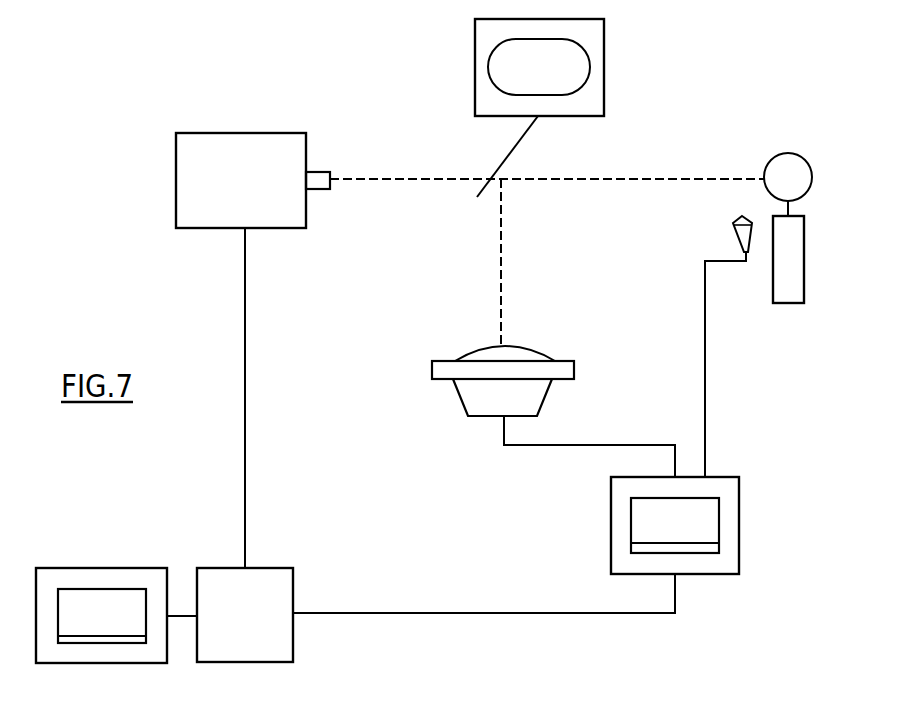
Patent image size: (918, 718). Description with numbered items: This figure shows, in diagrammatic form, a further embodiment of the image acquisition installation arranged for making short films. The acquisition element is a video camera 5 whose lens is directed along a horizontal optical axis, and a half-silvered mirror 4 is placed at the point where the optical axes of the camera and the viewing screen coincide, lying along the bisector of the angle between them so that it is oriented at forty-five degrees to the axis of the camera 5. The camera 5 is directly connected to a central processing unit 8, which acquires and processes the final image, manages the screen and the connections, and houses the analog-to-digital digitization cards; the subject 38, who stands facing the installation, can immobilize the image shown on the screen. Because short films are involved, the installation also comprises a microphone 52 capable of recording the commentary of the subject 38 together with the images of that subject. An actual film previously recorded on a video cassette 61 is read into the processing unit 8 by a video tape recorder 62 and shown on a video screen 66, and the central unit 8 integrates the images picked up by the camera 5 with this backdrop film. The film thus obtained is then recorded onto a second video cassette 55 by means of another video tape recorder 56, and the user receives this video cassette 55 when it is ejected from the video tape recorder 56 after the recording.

The half-silvered mirror 4 is at (500, 165).
The video camera 5 is at (176, 176).
The central processing unit 8 is at (243, 650).
The subject 38 is at (805, 262).
The microphone 52 is at (733, 234).
The video cassette 55 is at (637, 514).
The video tape recorder 56 is at (707, 577).
The video cassette 61 is at (58, 607).
The video tape recorder 62 is at (85, 665).
The video screen 66 is at (475, 66).